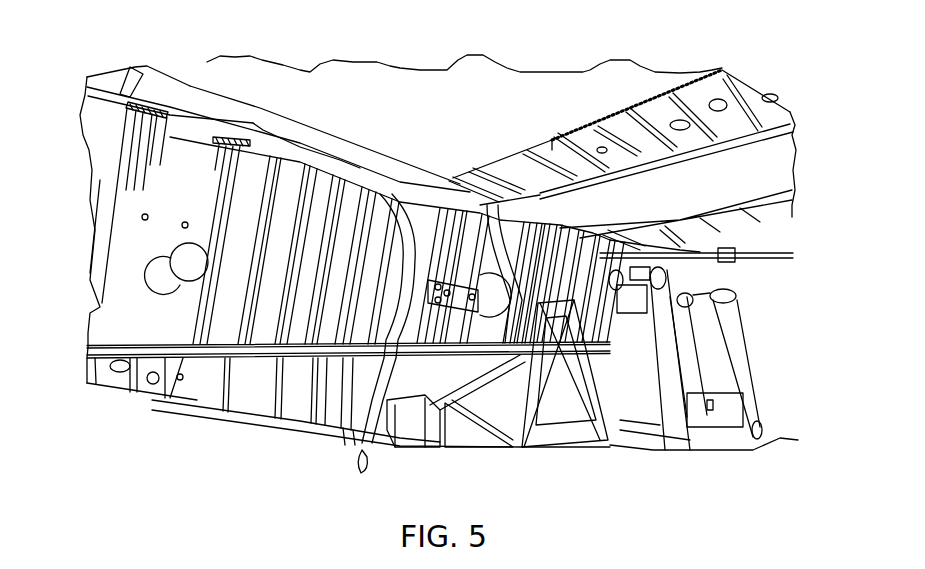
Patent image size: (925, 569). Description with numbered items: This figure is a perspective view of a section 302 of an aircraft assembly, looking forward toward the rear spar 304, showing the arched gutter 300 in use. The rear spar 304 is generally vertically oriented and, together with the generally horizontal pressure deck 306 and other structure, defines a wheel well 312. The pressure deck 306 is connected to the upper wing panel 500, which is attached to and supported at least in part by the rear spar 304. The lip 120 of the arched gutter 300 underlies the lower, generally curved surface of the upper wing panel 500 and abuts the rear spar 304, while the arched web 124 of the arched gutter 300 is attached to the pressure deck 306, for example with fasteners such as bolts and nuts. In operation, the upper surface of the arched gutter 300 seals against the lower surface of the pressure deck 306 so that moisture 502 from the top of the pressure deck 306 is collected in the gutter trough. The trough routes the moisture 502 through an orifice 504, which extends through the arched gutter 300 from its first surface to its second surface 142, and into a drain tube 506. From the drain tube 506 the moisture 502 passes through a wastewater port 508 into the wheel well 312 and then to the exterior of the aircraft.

The pressure deck 306 is at (228, 77).
The arched web 124 is at (320, 153).
The section 302 is at (718, 60).
The upper wing panel 500 is at (118, 96).
The lip 120 is at (190, 120).
The arched gutter 300 is at (353, 163).
The second surface 142 is at (213, 133).
The rear spar 304 is at (118, 215).
The wheel well 312 is at (767, 305).
The orifice 504 is at (386, 190).
The drain tube 506 is at (405, 289).
The wastewater port 508 is at (357, 442).
The moisture 502 is at (362, 473).